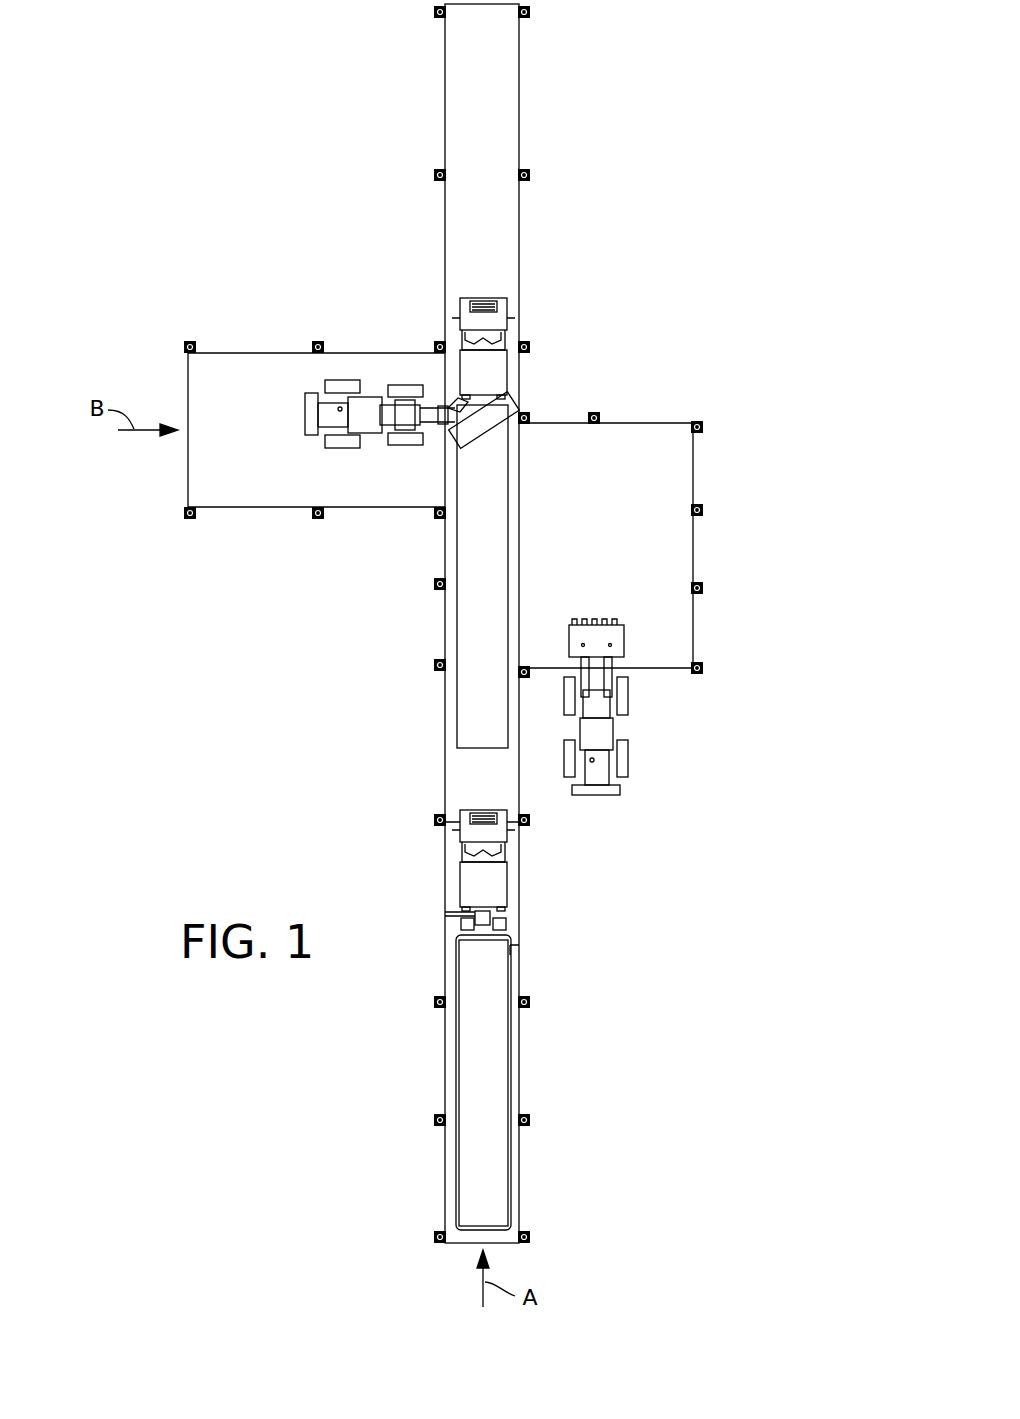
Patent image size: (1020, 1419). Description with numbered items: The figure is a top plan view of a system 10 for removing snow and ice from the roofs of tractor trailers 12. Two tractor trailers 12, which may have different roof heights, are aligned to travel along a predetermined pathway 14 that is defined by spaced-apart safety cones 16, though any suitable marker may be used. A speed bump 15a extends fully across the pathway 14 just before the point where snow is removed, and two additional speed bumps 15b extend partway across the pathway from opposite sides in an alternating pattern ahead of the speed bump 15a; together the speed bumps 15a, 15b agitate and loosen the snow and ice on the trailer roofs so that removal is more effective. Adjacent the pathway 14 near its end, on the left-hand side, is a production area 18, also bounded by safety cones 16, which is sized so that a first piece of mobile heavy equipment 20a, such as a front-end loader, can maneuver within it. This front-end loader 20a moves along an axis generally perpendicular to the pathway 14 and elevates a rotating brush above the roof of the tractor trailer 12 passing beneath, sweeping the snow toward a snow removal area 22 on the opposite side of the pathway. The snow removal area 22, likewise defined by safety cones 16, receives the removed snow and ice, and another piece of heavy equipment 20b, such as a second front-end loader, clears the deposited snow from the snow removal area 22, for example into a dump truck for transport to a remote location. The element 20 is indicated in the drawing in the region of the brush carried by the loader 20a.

The system for removing snow from a roof of a tractor trailer 10 is at (670, 235).
The tractor trailer 12 is at (525, 288).
The pathway 14 is at (475, 223).
The speed bump 15a is at (445, 822).
The speed bump 15b is at (470, 914).
The safety cone 16 is at (434, 13).
The production area 18 is at (230, 467).
The load 20 is at (505, 450).
The first piece of mobile heavy equipment 20a is at (332, 450).
The piece of heavy equipment 20b is at (628, 765).
The snow removal area 22 is at (640, 467).